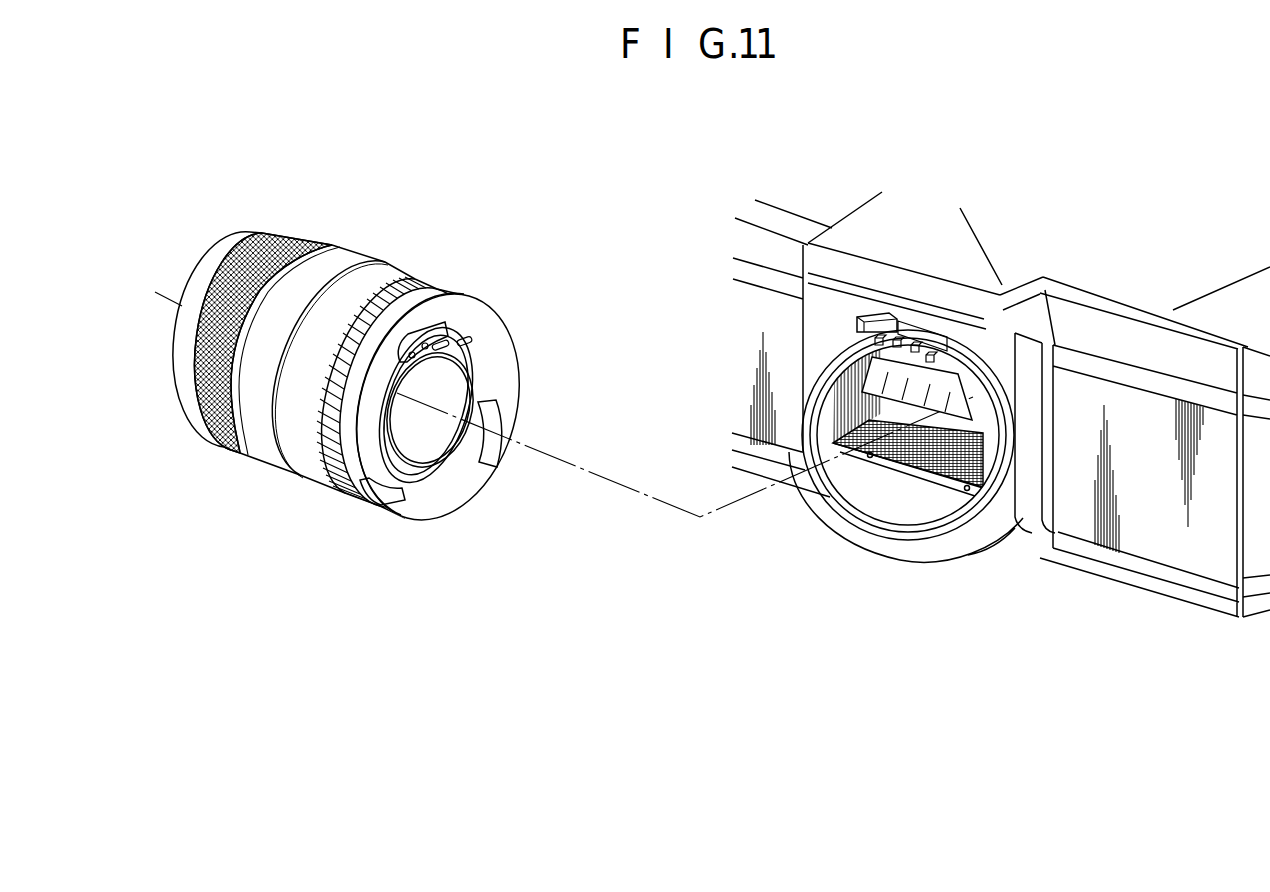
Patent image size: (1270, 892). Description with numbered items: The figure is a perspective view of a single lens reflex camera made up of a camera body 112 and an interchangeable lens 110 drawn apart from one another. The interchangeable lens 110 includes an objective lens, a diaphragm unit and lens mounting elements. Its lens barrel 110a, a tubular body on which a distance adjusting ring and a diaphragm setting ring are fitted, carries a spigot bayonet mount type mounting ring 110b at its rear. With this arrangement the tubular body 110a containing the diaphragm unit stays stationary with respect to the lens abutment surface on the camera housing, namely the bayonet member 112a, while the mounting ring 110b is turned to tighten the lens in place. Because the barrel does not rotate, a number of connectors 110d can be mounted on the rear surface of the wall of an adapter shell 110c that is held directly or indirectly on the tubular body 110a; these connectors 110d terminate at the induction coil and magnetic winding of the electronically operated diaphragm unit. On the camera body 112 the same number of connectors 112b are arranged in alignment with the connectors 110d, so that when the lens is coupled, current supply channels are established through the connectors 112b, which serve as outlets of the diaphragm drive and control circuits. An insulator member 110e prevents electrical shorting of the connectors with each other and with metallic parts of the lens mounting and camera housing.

The interchangeable lens 110 is at (564, 381).
The lens barrel 110a is at (264, 458).
The mounting ring 110b is at (447, 497).
The adapter shell 110c is at (395, 470).
The connectors 110d is at (466, 340).
The insulator member 110e is at (492, 362).
The camera body 112 is at (1001, 404).
The bayonet member 112a is at (900, 316).
The connectors 112b is at (931, 356).